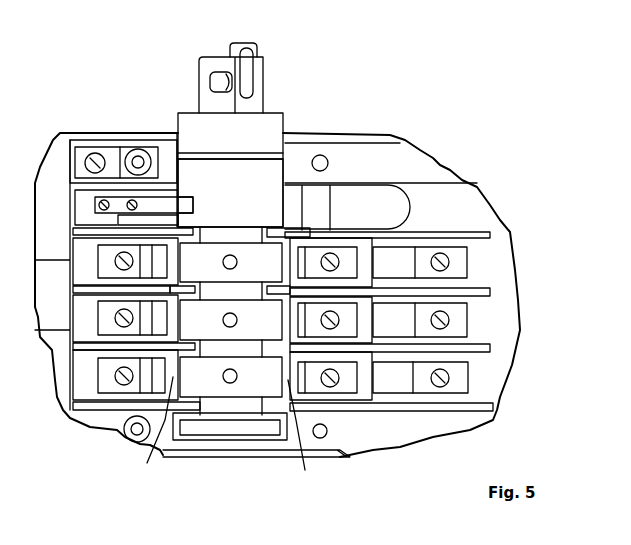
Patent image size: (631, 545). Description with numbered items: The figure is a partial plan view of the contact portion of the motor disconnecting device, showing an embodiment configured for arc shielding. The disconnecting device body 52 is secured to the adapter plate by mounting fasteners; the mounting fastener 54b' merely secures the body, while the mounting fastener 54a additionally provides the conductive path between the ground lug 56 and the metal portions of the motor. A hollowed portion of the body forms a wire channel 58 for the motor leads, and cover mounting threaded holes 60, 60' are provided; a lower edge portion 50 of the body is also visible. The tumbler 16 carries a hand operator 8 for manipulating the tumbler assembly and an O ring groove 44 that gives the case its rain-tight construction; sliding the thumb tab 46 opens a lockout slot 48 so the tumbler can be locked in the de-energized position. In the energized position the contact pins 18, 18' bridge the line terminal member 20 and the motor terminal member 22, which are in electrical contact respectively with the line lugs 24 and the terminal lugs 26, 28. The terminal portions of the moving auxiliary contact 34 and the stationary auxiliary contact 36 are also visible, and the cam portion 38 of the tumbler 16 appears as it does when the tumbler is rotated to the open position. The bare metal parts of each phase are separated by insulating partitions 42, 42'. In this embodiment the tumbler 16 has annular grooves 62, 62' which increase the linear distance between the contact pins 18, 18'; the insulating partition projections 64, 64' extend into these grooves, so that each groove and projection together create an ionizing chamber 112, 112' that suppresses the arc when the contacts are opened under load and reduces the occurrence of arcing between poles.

The hand operator 8 is at (199, 75).
The tumbler 16 is at (230, 193).
The contact pin 18 is at (231, 262).
The contact pin 18' is at (246, 383).
The line terminal member 20 is at (167, 264).
The motor terminal member 22 is at (293, 316).
The line lug 24 is at (98, 318).
The terminal lug 26 is at (358, 253).
The terminal 28 is at (467, 308).
The moving auxiliary contact 34 is at (188, 208).
The stationary auxiliary contact 36 is at (95, 206).
The cam portion 38 is at (178, 198).
The insulating partition 42 is at (117, 240).
The insulating partition 42' is at (400, 247).
The O ring groove 44 is at (242, 150).
The thumb tab 46 is at (248, 52).
The lockout slot 48 is at (232, 73).
The bottom rail 50 is at (248, 457).
The disconnecting device body 52 is at (433, 160).
The mounting fastener 54a is at (140, 149).
The mounting fastener 54b' is at (122, 440).
The ground lug 56 is at (117, 147).
The wire channel 58 is at (347, 207).
The cover mounting threaded hole 60 is at (329, 143).
The cover mounting threaded hole 60' is at (343, 431).
The annular groove 62 is at (231, 377).
The annular groove 62' is at (230, 423).
The insulating partition projection 64 is at (279, 221).
The insulating partition projection 64' is at (230, 306).
The ionizing chamber 112 is at (156, 432).
The ionizing chamber 112' is at (307, 436).